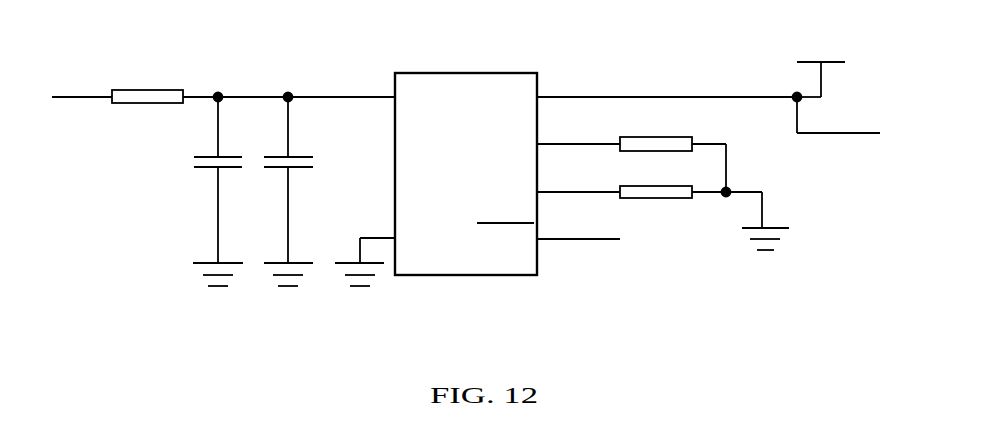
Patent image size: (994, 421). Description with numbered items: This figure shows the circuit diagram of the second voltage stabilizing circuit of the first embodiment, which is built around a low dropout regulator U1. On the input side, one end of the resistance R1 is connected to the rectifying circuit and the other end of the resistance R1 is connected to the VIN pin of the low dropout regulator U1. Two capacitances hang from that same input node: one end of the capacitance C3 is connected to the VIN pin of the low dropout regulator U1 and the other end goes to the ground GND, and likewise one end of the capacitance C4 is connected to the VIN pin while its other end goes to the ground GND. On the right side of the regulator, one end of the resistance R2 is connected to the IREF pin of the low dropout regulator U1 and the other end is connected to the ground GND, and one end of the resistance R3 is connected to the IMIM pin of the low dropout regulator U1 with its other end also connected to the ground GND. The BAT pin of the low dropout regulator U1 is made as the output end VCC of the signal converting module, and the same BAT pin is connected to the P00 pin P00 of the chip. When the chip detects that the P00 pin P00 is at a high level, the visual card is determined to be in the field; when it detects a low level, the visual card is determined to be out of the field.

The resistance R1 is at (147, 82).
The capacitance C3 is at (207, 180).
The capacitance C4 is at (282, 180).
The low dropout regulator U1 is at (596, 157).
The resistance R2 is at (673, 149).
The resistance R3 is at (673, 177).
The ground GND is at (488, 263).
The output end VCC is at (821, 60).
The P00 pin P00 is at (846, 132).